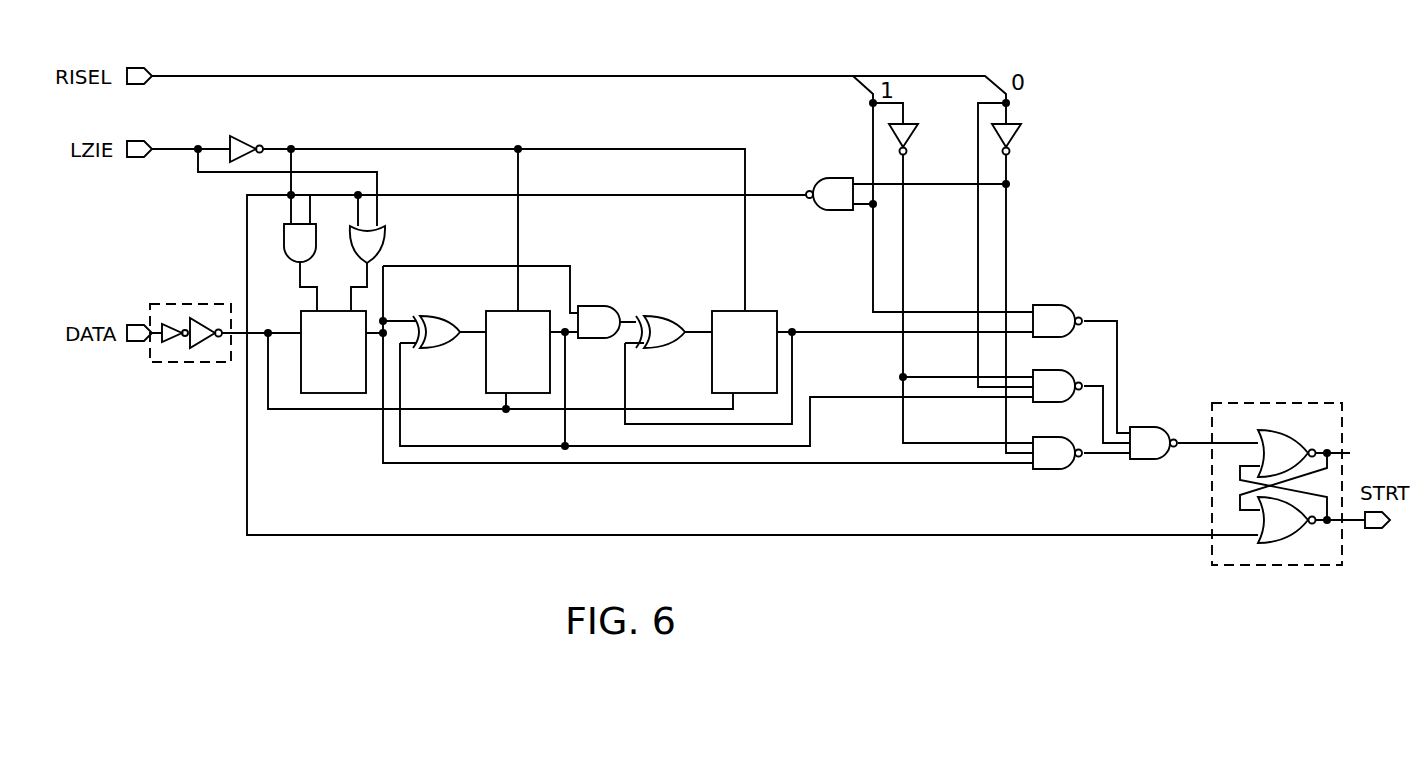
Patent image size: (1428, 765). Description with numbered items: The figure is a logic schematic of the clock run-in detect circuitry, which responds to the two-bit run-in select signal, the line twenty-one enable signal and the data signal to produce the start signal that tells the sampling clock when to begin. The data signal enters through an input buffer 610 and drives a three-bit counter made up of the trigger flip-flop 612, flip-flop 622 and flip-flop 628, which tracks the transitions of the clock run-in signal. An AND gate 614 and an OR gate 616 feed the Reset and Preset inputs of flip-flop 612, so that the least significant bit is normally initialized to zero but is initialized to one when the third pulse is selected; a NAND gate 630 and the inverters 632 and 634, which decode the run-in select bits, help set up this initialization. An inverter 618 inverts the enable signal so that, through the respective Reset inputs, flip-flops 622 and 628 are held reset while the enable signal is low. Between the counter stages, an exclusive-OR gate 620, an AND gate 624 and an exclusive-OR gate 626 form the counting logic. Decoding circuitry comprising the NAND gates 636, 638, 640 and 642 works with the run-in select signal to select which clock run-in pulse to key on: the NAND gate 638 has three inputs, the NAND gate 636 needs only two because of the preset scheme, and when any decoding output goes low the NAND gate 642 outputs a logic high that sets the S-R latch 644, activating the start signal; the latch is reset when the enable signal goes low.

The input buffer 610 is at (226, 300).
The trigger flip-flop 612 is at (300, 326).
The AND gate 614 is at (318, 238).
The OR gate 616 is at (386, 247).
The inverter 618 is at (250, 137).
The exclusive-OR gate 620 is at (445, 316).
The flip-flop 622 is at (535, 308).
The AND gate 624 is at (604, 305).
The exclusive-OR gate 626 is at (668, 315).
The flip-flop 628 is at (757, 311).
The NAND gate 630 is at (841, 178).
The inverter 632 is at (907, 128).
The inverter 634 is at (1020, 131).
The NAND gate 636 is at (1068, 304).
The NAND gate 638 is at (1090, 368).
The NAND gate 640 is at (1055, 470).
The NAND gate 642 is at (1158, 461).
The S-R latch 644 is at (1315, 401).